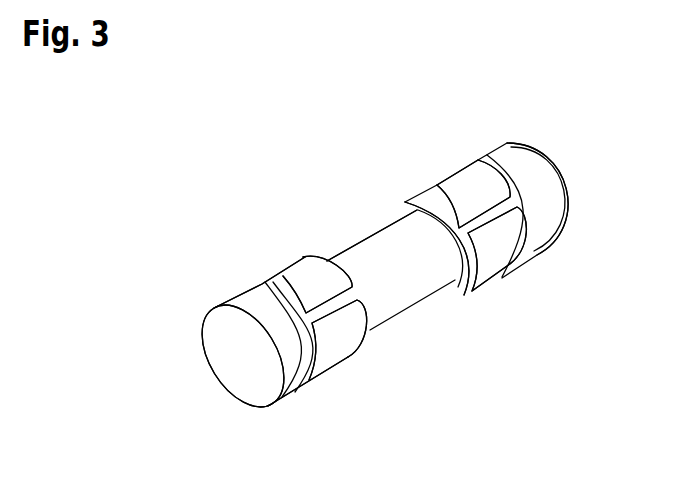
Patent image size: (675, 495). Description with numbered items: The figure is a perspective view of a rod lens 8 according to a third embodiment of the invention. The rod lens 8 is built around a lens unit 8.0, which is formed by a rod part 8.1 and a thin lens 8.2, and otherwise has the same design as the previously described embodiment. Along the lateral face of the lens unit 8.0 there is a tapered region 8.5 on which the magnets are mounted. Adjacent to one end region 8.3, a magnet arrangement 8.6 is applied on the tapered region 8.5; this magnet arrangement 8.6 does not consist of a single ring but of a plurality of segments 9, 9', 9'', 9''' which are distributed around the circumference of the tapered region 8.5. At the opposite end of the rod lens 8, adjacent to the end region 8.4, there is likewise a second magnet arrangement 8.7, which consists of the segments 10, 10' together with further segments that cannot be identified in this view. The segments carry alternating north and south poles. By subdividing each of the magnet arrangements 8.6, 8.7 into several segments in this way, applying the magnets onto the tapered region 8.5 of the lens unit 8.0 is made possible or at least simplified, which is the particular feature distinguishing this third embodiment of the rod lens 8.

The rod lens 8 is at (322, 98).
The lens unit 8.0 is at (312, 158).
The rod part 8.1 is at (248, 303).
The thin lens 8.2 is at (525, 144).
The end region 8.3 is at (540, 255).
The end region 8.4 is at (289, 396).
The tapered region 8.5 is at (413, 303).
The magnet arrangement 8.6 is at (515, 293).
The magnet arrangement 8.7 is at (341, 394).
The segment 9 is at (451, 287).
The segment 9' is at (523, 262).
The segment 9'' is at (459, 169).
The segment 9''' is at (413, 216).
The segment 10 is at (361, 358).
The segment 10' is at (316, 253).